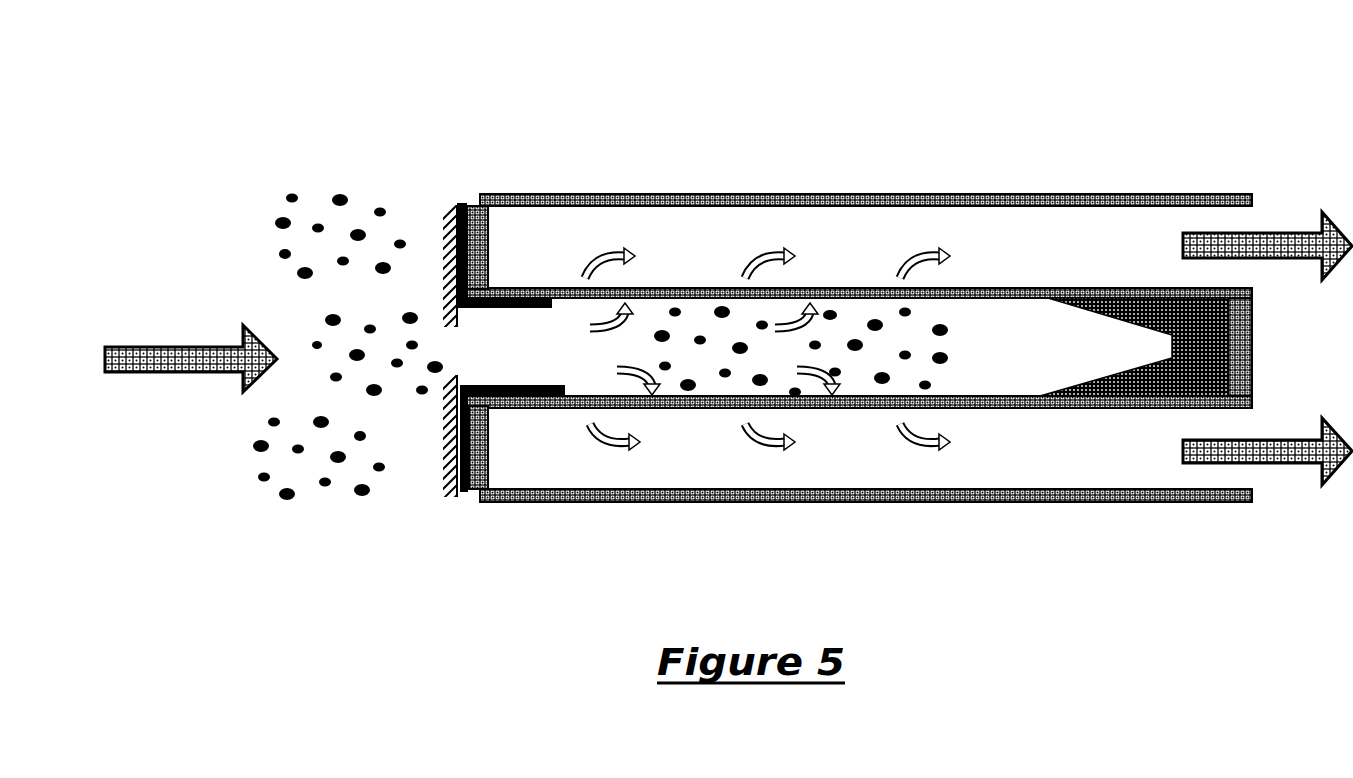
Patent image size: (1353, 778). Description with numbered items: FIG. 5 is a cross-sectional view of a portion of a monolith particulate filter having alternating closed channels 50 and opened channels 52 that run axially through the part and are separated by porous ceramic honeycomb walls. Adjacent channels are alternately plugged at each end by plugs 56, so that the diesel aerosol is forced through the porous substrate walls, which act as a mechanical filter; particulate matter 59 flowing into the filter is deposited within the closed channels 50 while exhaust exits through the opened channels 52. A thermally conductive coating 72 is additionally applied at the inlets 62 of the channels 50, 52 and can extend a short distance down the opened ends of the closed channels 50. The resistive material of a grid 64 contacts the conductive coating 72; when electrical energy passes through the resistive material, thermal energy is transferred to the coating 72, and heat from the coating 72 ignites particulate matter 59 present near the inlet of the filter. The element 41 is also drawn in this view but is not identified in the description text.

The outer housing tube 41 is at (713, 290).
The inner tube 50 is at (1065, 330).
The annular passage 52 is at (1025, 238).
The end wall 56 is at (480, 195).
The porous plug 59 is at (1212, 338).
The particle stream 62 is at (437, 337).
The mounting wall 64 is at (455, 472).
The seal 72 is at (456, 200).